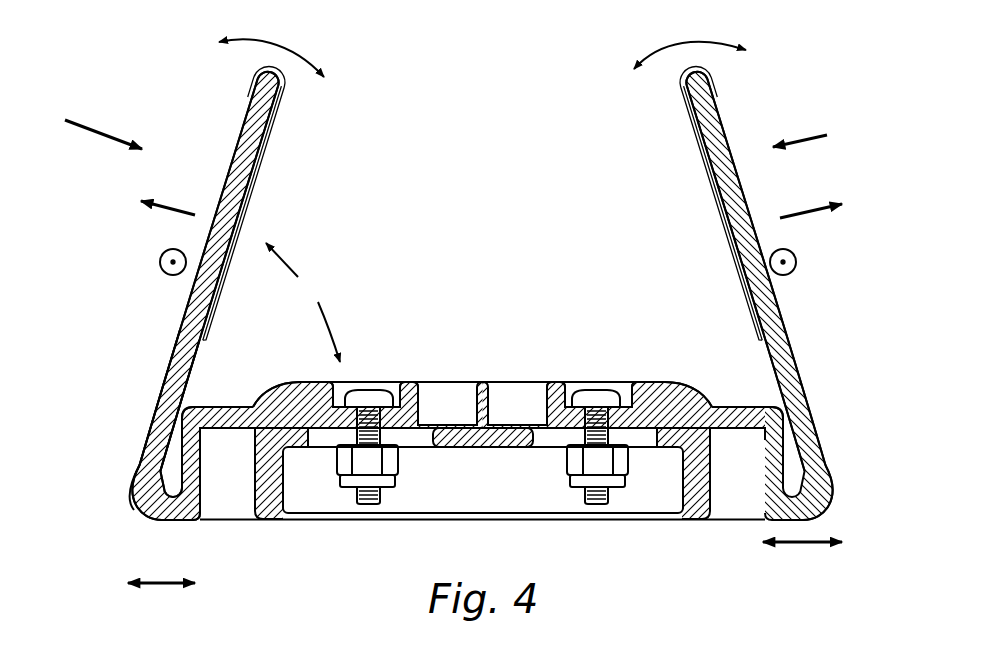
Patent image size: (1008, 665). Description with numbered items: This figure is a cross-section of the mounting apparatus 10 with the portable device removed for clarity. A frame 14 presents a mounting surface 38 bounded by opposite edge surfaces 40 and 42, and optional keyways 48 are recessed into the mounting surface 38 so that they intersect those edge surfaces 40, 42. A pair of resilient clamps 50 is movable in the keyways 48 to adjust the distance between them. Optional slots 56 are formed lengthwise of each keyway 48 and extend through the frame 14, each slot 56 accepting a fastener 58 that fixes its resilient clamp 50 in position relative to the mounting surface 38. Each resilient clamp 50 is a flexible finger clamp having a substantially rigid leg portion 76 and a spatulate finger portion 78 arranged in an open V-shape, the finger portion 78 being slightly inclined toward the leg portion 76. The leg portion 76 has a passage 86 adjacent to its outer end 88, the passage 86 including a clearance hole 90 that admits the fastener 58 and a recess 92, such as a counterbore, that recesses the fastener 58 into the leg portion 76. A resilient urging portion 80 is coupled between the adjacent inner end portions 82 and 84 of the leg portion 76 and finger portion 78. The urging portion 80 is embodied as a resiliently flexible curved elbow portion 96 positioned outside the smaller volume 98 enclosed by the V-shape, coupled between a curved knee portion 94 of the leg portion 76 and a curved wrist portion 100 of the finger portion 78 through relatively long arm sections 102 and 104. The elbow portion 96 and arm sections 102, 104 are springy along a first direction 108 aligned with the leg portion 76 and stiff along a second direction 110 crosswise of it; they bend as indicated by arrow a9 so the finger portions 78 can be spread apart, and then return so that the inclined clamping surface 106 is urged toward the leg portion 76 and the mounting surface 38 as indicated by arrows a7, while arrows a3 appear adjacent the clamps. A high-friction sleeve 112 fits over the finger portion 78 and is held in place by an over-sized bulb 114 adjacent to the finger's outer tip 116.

The mounting apparatus 10 is at (135, 98).
The frame 14 is at (652, 521).
The mounting surface 38 is at (497, 381).
The edge surface 40 is at (708, 467).
The edge surface 42 is at (257, 479).
The keyway 48 is at (445, 393).
The resilient clamp 50 is at (146, 447).
The slot 56 is at (430, 428).
The fastener 58 is at (368, 388).
The leg portion 76 is at (307, 388).
The finger portion 78 is at (235, 200).
The resilient urging portion 80 is at (140, 505).
The inner end portion 82 is at (228, 406).
The inner end portion 84 is at (183, 358).
The passage 86 is at (353, 418).
The outer end 88 is at (403, 385).
The clearance hole 90 is at (384, 427).
The recess 92 is at (378, 410).
The curved knee portion 94 is at (201, 429).
The curved elbow portion 96 is at (160, 522).
The smaller volume 98 is at (303, 302).
The curved wrist portion 100 is at (170, 400).
The arm section 102 is at (133, 473).
The arm section 104 is at (201, 478).
The clamping surface 106 is at (259, 170).
The first direction 108 is at (277, 47).
The second direction 110 is at (161, 269).
The sleeve 112 is at (283, 130).
The bulb 114 is at (280, 88).
The outer tip 116 is at (254, 75).
The direction arrow a3 is at (160, 585).
The arrows a7 is at (96, 133).
The arrow a9 is at (160, 212).